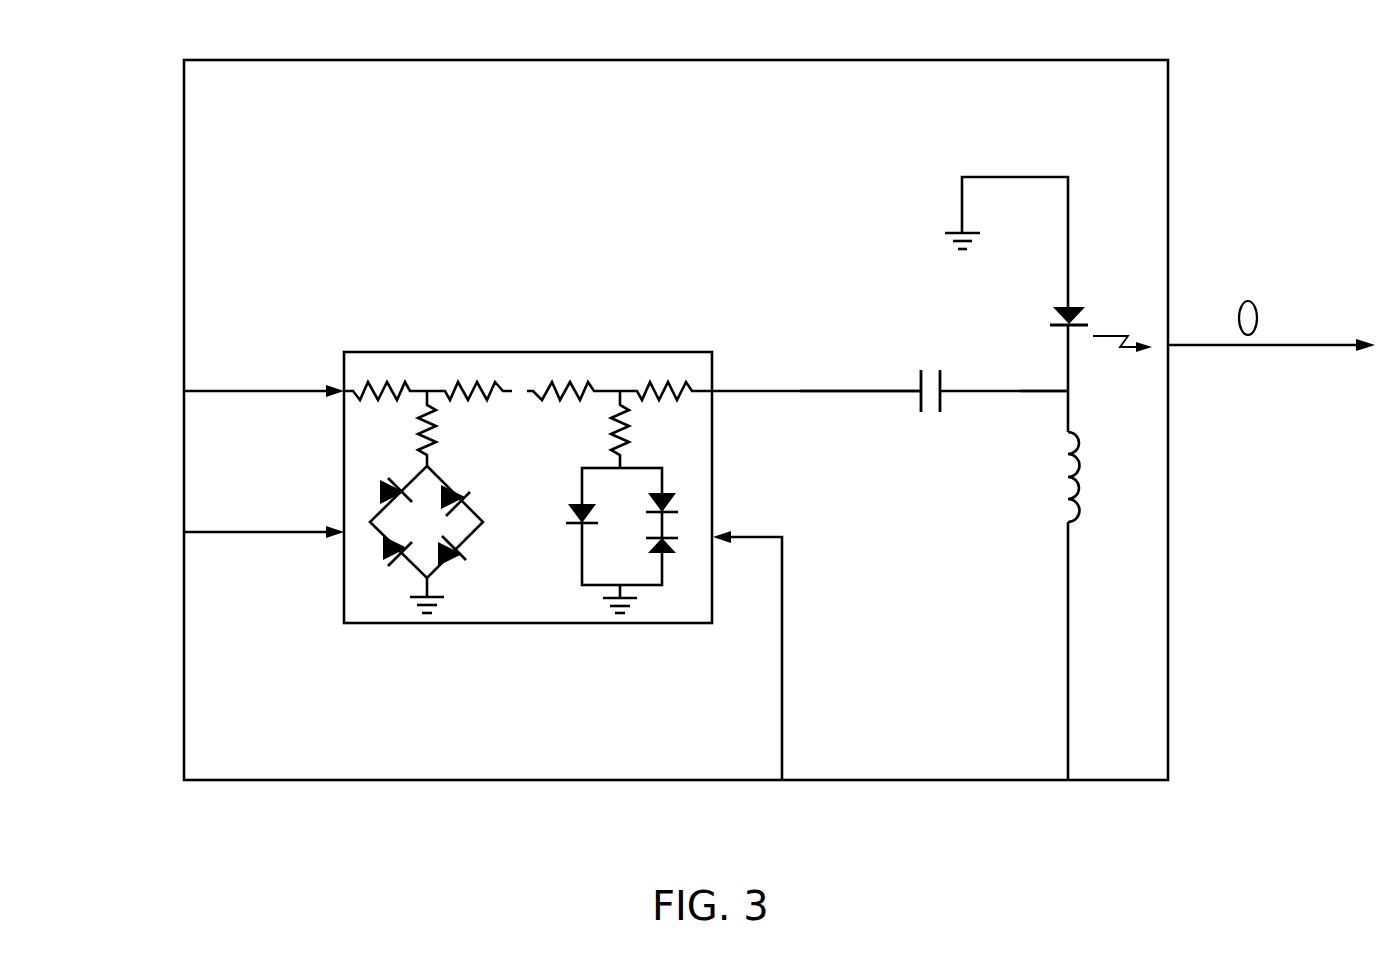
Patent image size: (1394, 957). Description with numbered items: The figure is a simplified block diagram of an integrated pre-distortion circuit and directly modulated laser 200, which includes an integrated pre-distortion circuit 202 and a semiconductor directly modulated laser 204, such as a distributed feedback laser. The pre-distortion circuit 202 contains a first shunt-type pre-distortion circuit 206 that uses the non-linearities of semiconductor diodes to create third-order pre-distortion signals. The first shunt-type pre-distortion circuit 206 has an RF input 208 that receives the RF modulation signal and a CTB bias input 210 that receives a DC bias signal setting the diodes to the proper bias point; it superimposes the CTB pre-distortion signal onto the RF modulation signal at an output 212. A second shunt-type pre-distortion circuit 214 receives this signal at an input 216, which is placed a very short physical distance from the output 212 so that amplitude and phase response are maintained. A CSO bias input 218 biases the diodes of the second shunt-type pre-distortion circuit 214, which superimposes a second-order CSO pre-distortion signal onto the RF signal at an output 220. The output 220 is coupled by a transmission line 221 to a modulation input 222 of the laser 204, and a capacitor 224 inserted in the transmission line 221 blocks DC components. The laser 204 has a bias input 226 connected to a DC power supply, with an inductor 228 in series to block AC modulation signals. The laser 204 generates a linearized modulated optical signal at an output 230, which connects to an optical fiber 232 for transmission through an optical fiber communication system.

The integrated pre-distortion circuit and directly modulated laser 200 is at (677, 60).
The integrated pre-distortion circuit 202 is at (700, 351).
The semiconductor directly modulated laser 204 is at (1080, 310).
The first shunt-type pre-distortion circuit 206 is at (465, 565).
The RF input 208 is at (330, 388).
The CTB bias input 210 is at (335, 538).
The output 212 is at (505, 395).
The second shunt-type pre-distortion circuit 214 is at (578, 524).
The input 216 is at (533, 395).
The CSO bias input 218 is at (718, 535).
The output 220 is at (718, 393).
The transmission line 221 is at (856, 390).
The modulation input 222 is at (1064, 394).
The capacitor 224 is at (928, 416).
The bias input 226 is at (1070, 327).
The inductor 228 is at (1079, 516).
The output 230 is at (1086, 320).
The optical fiber 232 is at (1325, 343).